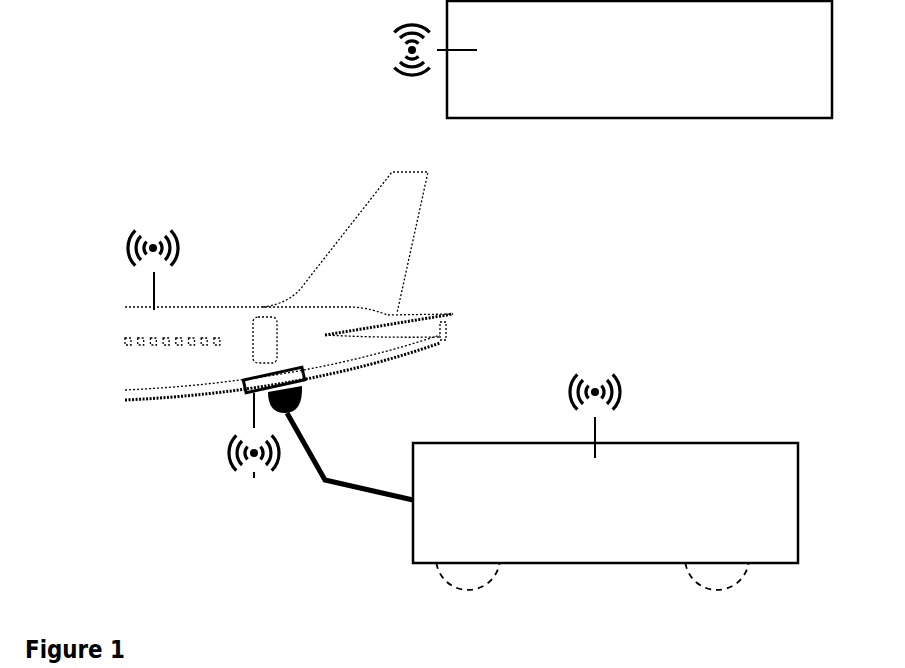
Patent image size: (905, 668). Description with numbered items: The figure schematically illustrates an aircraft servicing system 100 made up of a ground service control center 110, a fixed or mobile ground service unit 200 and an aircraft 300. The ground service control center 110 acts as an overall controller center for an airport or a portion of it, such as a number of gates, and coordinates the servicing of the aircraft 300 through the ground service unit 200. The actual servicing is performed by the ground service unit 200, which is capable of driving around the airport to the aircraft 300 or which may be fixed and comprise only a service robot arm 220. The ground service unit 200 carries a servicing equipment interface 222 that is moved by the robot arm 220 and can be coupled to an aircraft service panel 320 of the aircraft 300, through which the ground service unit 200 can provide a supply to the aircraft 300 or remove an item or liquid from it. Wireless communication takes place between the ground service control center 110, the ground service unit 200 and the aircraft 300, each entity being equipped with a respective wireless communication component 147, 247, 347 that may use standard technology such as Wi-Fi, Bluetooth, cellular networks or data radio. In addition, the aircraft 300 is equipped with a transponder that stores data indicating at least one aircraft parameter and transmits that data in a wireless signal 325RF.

The aircraft servicing system 100 is at (200, 120).
The ground service control center 110 is at (639, 59).
The wireless communication component 147 is at (387, 50).
The ground service unit 200 is at (605, 516).
The robot arm 220 is at (352, 488).
The servicing equipment interface 222 is at (305, 398).
The wireless communication component 247 is at (625, 393).
The aircraft 300 is at (400, 243).
The aircraft service panel 320 is at (243, 388).
The wireless signal 325RF is at (254, 478).
The wireless communication component 347 is at (123, 248).